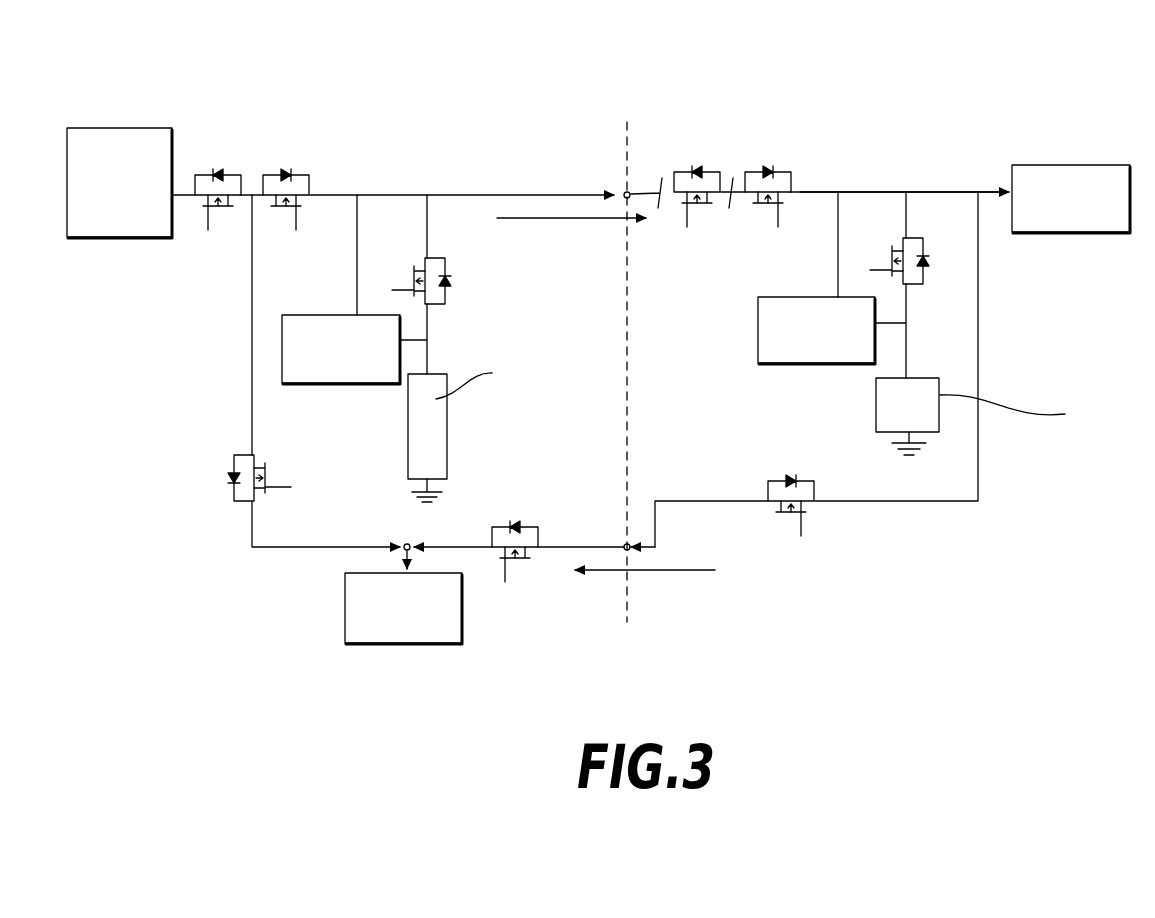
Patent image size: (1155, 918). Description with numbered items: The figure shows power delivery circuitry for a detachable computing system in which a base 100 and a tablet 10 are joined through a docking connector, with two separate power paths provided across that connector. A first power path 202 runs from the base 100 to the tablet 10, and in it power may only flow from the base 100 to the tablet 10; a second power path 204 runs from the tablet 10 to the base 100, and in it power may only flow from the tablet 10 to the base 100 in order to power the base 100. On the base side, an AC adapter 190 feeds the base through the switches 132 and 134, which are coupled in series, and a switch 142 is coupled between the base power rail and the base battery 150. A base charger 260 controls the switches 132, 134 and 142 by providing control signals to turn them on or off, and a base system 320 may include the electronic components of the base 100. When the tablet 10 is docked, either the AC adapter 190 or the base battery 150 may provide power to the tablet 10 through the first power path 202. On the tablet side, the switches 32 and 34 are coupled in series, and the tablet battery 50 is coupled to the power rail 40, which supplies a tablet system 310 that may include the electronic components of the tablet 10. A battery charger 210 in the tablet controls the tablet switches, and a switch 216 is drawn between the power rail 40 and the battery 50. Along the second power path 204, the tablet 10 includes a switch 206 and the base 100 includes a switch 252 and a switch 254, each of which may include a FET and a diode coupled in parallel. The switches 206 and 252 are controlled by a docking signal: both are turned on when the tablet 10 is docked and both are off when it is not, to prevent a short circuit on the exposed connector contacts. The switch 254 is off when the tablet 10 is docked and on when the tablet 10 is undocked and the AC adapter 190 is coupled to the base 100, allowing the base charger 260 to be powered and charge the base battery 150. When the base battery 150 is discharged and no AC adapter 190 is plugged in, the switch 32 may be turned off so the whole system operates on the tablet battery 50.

The tablet 10 is at (862, 107).
The base 100 is at (476, 123).
The switch 32 is at (703, 161).
The switch 34 is at (769, 161).
The power rail 40 is at (950, 190).
The battery 50 is at (876, 416).
The switch 132 is at (221, 164).
The switch 134 is at (292, 160).
The switch 142 is at (450, 285).
The base battery 150 is at (448, 425).
The AC adapter 190 is at (124, 240).
The first power path 202 is at (528, 222).
The second power path 204 is at (705, 573).
The switch 206 is at (813, 522).
The battery charger 210 is at (822, 297).
The tablet battery switch 216 is at (938, 258).
The switch 252 is at (522, 578).
The switch 254 is at (282, 470).
The base charger 260 is at (302, 315).
The tablet system 310 is at (1073, 165).
The base system 320 is at (398, 647).